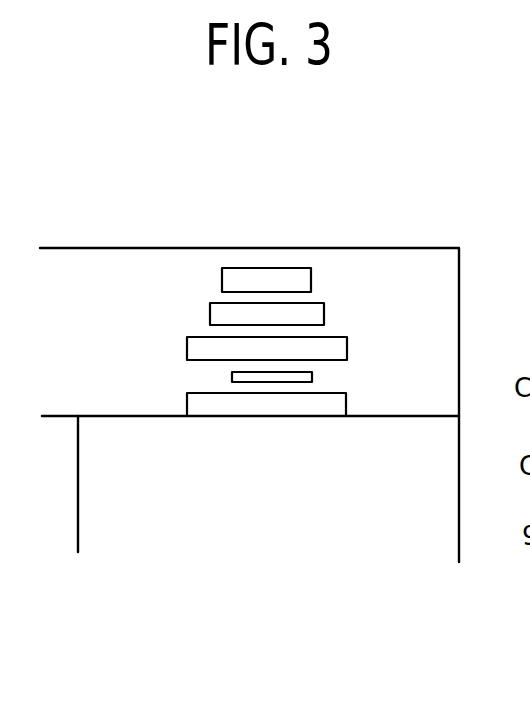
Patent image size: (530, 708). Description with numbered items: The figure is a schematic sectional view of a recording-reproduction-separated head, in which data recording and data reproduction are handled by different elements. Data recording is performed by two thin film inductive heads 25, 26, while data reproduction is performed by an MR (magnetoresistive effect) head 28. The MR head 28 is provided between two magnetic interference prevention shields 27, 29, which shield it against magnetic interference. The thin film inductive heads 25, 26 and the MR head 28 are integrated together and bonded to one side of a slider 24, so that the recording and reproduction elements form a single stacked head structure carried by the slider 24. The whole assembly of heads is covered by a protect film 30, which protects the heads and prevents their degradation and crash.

The slider 24 is at (127, 518).
The thin film inductive head 25 is at (242, 268).
The thin film inductive head 26 is at (208, 303).
The magnetic interference prevention shield 27 is at (335, 337).
The MR head 28 is at (313, 378).
The magnetic interference prevention shield 29 is at (353, 331).
The protect film 30 is at (285, 332).